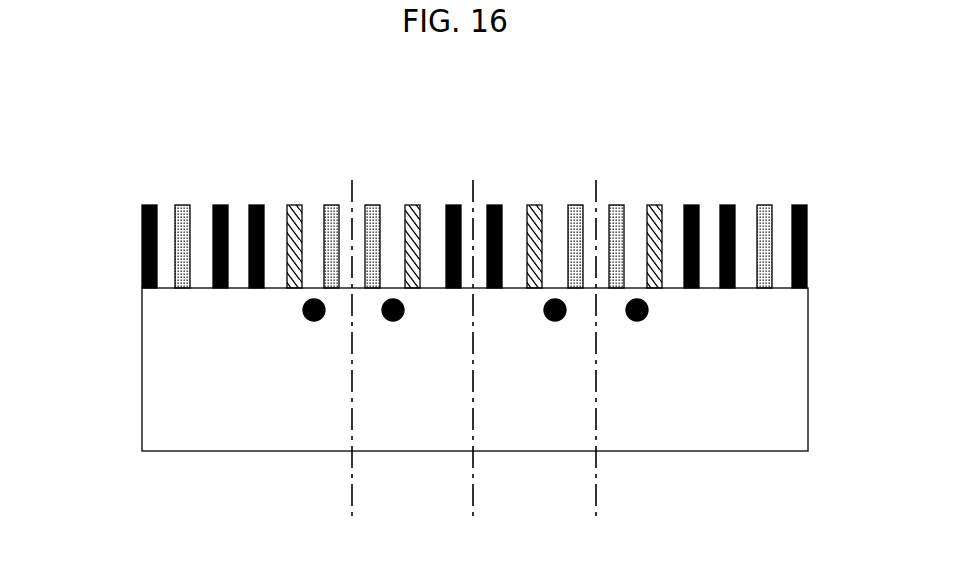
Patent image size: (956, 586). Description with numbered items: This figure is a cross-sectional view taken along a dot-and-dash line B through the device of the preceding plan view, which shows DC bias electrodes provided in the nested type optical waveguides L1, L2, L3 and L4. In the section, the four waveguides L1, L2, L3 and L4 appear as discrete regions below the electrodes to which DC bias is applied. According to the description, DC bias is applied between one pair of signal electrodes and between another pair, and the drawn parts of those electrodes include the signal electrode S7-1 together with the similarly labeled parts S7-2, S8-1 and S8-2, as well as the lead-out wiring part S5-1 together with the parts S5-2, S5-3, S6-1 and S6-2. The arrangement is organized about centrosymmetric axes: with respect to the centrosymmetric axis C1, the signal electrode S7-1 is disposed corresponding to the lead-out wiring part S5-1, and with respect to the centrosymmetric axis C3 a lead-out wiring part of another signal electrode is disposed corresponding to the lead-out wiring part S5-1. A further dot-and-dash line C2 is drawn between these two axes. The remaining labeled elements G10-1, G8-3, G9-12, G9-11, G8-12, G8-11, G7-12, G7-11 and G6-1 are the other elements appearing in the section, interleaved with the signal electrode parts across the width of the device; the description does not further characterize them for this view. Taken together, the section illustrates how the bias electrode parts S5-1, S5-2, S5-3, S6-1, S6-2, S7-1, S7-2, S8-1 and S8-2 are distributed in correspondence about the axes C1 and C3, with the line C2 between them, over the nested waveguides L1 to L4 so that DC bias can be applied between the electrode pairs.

The gate line G10-1 is at (142, 250).
The gate line G8-3 is at (180, 205).
The gate line G9-12 is at (216, 205).
The gate line G9-11 is at (257, 205).
The sensing line S7-2 is at (290, 205).
The sensing line S8-2 is at (328, 205).
The sensing line S8-1 is at (370, 205).
The signal electrode S7-1 is at (410, 205).
The gate line G8-12 is at (452, 205).
The gate line G8-11 is at (492, 205).
The sensing line S6-2 is at (533, 205).
The sensing line S5-3 is at (573, 205).
The sensing line S5-2 is at (615, 205).
The sensing line S6-1 is at (652, 205).
The gate line G7-12 is at (690, 205).
The gate line G7-11 is at (727, 205).
The lead-out wiring part S5-1 is at (764, 205).
The gate line G6-1 is at (800, 205).
The nested type optical waveguide L4 is at (316, 321).
The nested type optical waveguide L3 is at (395, 321).
The nested type optical waveguide L2 is at (557, 321).
The nested type optical waveguide L1 is at (640, 321).
The centrosymmetric axis C1 is at (354, 366).
The centrosymmetric axis C3 is at (476, 366).
The cutting line C2 is at (599, 366).